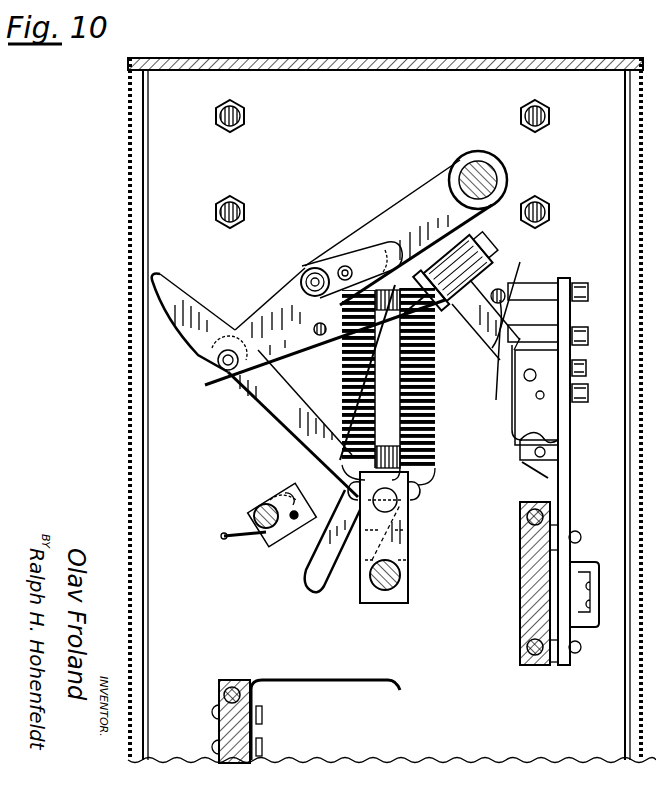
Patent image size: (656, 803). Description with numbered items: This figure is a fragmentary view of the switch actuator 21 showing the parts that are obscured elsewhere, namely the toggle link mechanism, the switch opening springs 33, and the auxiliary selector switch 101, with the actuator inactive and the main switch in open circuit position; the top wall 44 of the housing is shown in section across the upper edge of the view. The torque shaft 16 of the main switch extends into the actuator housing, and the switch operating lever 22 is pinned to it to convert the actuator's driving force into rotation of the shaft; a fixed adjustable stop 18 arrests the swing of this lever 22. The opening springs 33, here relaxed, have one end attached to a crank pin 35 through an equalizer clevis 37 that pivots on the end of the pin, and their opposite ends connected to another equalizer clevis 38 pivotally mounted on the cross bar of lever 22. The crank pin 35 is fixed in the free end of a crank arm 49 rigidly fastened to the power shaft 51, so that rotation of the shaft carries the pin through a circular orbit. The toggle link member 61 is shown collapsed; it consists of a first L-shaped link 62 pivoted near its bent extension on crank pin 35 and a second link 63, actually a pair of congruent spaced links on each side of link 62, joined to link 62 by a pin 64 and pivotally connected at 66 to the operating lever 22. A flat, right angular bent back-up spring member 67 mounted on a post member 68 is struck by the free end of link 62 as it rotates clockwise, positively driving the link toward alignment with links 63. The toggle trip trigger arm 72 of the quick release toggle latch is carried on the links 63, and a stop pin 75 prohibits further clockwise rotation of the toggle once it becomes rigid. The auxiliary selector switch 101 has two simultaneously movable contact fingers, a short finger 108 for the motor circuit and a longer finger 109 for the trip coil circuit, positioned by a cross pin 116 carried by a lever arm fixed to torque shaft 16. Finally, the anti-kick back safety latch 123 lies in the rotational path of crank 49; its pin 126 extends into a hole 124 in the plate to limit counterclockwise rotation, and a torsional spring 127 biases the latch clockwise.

The torque shaft 16 is at (470, 172).
The fixed adjustable stop 18 is at (462, 310).
The switch actuator 21 is at (128, 395).
The switch operating lever 22 is at (440, 200).
The switch opening springs 33 is at (342, 372).
The crank pin 35 is at (396, 508).
The equalizer clevis 37 is at (418, 494).
The equalizer clevis 38 is at (346, 265).
The top wall 44 is at (341, 66).
The crank arm 49 is at (398, 550).
The power shaft 51 is at (386, 592).
The toggle link member 61 is at (245, 414).
The first link 62 is at (300, 436).
The second link 63 is at (262, 326).
The pin 64 is at (220, 370).
The pivotal connection 66 is at (396, 252).
The back-up spring member 67 is at (300, 680).
The post member 68 is at (220, 728).
The toggle trip trigger arm 72 is at (314, 268).
The stop pin 75 is at (318, 324).
The auxiliary selector switch 101 is at (532, 280).
The short contact finger 108 is at (518, 340).
The long contact finger 109 is at (488, 334).
The cross pin 116 is at (500, 288).
The anti-kick back safety latch 123 is at (262, 510).
The hole 124 is at (284, 492).
The pin 126 is at (294, 522).
The torsional spring 127 is at (238, 540).